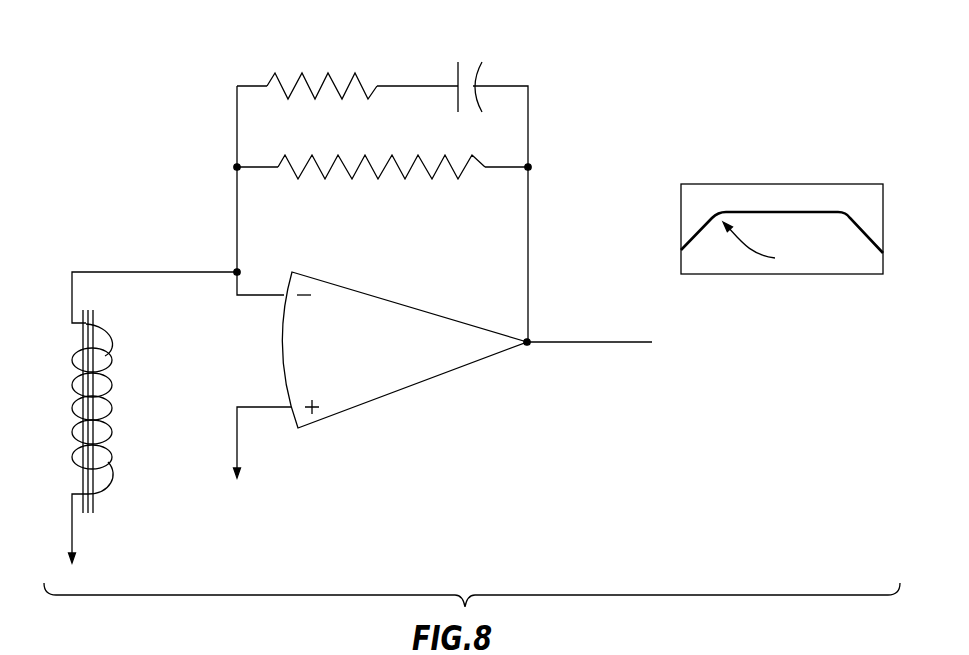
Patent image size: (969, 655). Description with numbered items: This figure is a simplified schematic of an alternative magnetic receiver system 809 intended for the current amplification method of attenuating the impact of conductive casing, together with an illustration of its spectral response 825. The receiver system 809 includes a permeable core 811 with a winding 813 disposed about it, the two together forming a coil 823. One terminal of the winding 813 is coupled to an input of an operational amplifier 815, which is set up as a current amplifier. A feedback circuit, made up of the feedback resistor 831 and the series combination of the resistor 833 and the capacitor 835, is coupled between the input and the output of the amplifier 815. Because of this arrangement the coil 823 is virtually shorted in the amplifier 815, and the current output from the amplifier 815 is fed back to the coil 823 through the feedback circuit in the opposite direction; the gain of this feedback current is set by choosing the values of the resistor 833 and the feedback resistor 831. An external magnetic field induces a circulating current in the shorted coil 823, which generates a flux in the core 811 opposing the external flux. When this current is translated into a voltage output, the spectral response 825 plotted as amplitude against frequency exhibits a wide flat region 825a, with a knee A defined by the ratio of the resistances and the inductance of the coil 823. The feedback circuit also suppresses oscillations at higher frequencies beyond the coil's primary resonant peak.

The magnetic receiver system 809 is at (128, 93).
The permeable core 811 is at (97, 505).
The winding 813 is at (113, 340).
The operational amplifier 815 is at (449, 397).
The coil 823 is at (133, 407).
The spectral response 825 is at (683, 148).
The wide flat region 825a is at (838, 214).
The feedback resistor Rfb 831 is at (350, 178).
The resistor 833 is at (339, 94).
The capacitor 835 is at (479, 72).